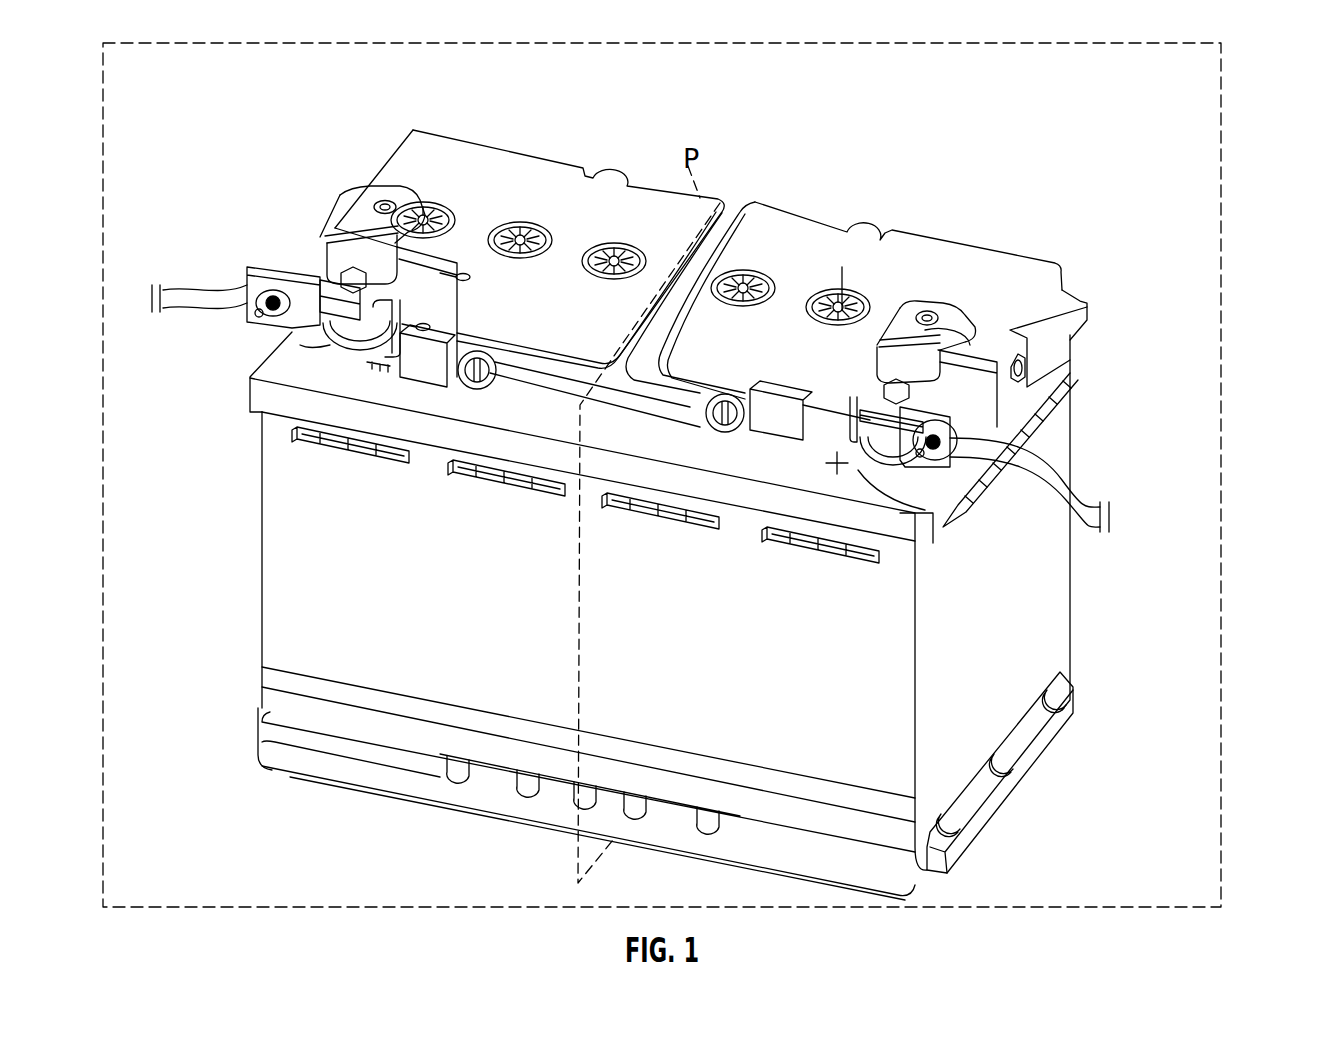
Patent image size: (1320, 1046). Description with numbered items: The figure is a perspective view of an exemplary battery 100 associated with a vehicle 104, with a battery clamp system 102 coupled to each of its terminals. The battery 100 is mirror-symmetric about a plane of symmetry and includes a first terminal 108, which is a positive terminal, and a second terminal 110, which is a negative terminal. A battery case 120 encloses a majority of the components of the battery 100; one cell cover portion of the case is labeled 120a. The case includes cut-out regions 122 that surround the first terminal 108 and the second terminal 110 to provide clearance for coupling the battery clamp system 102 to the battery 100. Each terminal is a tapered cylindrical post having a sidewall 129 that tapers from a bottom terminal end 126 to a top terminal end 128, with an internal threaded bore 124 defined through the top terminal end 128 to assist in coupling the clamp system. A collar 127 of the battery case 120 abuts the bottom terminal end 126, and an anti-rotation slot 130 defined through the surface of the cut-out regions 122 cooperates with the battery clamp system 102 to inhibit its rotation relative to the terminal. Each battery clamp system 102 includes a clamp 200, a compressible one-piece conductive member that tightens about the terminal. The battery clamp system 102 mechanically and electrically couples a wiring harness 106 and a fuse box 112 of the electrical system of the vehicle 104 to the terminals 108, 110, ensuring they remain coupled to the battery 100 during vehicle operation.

The battery 100 is at (875, 200).
The battery clamp system 102 is at (432, 249).
The vehicle 104 is at (1222, 122).
The wiring harness 106 is at (1095, 508).
The first terminal 108 is at (907, 478).
The second terminal 110 is at (272, 368).
The fuse box 112 is at (388, 198).
The battery case 120 is at (528, 178).
The second cell cover 120a is at (787, 232).
The cut-out regions 122 is at (253, 373).
The internal threaded bore 124 is at (337, 262).
The bottom terminal end 126 is at (255, 405).
The collar 127 is at (318, 340).
The top terminal end 128 is at (317, 268).
The sidewall 129 is at (318, 328).
The anti-rotation slot 130 is at (340, 345).
The clamp 200 is at (348, 188).